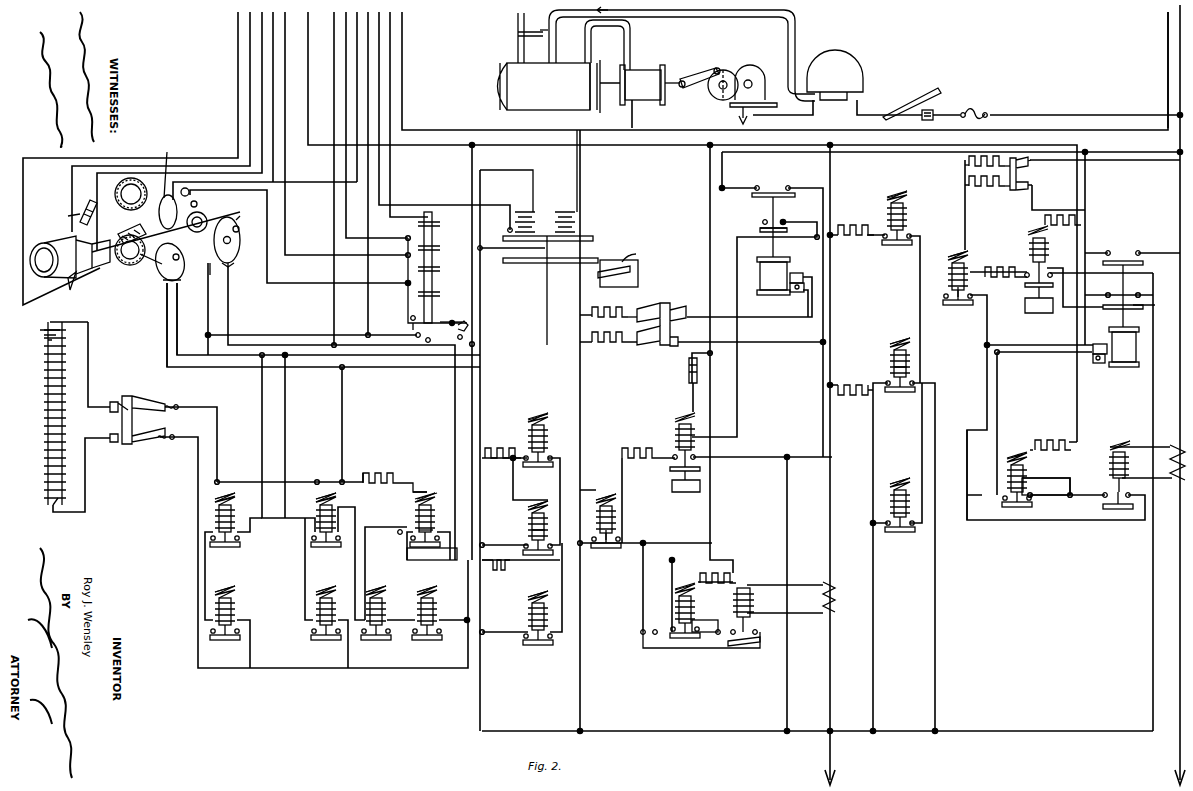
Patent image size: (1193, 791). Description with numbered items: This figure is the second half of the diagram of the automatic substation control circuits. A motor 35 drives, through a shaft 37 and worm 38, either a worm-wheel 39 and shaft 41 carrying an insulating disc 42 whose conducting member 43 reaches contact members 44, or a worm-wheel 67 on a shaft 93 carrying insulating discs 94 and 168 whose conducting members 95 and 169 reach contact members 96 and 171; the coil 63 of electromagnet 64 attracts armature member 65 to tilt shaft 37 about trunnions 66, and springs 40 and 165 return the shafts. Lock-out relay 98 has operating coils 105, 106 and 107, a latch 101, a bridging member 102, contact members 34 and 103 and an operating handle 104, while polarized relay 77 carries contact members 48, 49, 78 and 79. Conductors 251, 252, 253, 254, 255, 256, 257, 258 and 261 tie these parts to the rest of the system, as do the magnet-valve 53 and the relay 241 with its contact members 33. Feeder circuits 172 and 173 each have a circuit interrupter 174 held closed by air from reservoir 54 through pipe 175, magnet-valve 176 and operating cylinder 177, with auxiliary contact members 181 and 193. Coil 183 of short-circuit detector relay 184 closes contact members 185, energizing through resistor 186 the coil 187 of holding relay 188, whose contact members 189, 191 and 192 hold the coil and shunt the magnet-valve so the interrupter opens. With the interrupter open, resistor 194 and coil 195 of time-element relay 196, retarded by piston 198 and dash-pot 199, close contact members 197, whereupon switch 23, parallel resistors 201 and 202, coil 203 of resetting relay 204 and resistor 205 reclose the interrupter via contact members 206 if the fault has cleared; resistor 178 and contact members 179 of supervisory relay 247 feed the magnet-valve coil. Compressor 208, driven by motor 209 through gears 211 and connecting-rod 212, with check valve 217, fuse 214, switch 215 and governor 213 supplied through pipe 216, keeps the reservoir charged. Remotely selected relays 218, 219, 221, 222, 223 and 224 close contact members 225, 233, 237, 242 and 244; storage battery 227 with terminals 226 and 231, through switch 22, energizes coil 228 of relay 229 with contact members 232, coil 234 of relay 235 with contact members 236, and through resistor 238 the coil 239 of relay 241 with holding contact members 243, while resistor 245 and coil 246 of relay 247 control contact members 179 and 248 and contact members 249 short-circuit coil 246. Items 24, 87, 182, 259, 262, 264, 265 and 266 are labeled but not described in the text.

The switch 22 is at (144, 413).
The switch 23 is at (661, 332).
The relay armature 24 is at (1017, 180).
The contact members 33 is at (432, 527).
The contact members 34 is at (453, 315).
The motor 35 is at (53, 253).
The shaft 37 is at (77, 253).
The worm 38 is at (166, 231).
The worm-wheel 39 is at (128, 256).
The spring 40 is at (141, 241).
The shaft 41 is at (154, 249).
The insulating disc 42 is at (162, 262).
The electrical conducting member 43 is at (180, 256).
The contact members 44 is at (166, 281).
The contact members 48 is at (618, 263).
The contact members 49 is at (632, 253).
The magnet-valve 53 is at (519, 35).
The reservoir 54 is at (559, 86).
The operating coil 63 is at (88, 207).
The electromagnet 64 is at (66, 216).
The armature member 65 is at (101, 254).
The trunnions 66 is at (80, 277).
The worm-wheel 67 is at (135, 190).
The polarized relay 77 is at (543, 212).
The contact members 78 is at (555, 243).
The contact members 79 is at (500, 229).
The contact arm 87 is at (515, 256).
The shaft 93 is at (195, 224).
The insulating disc 94 is at (198, 201).
The electrical conducting member 95 is at (167, 169).
The contact members 96 is at (185, 187).
The lock-out relay 98 is at (437, 259).
The latch 101 is at (410, 316).
The bridging member 102 is at (414, 332).
The contact members 103 is at (428, 345).
The operating handle 104 is at (465, 337).
The operating coil 105 is at (441, 269).
The operating coil 106 is at (441, 247).
The operating coil 107 is at (441, 224).
The spring 165 is at (211, 214).
The insulating disc 168 is at (248, 214).
The conducting member 169 is at (249, 228).
The contact members 171 is at (233, 267).
The feeder circuit 172 is at (841, 464).
The feeder circuit 173 is at (1178, 760).
The circuit interrupter 174 is at (947, 249).
The pipe 175 is at (1098, 375).
The magnet-valve 176 is at (949, 306).
The operating cylinder 177 is at (948, 312).
The resistor 178 is at (671, 495).
The contact members 179 is at (719, 460).
The auxiliary contact members 181 is at (764, 220).
The resistor 182 is at (1004, 528).
The operating coil 183 is at (931, 529).
The short-circuit detector relay 184 is at (931, 554).
The contact members 185 is at (930, 580).
The resistor 186 is at (885, 512).
The operating coil 187 is at (865, 532).
The holding relay 188 is at (881, 555).
The contact members 189 is at (985, 505).
The contact members 191 is at (848, 562).
The contact members 192 is at (857, 586).
The auxiliary contact members 193 is at (944, 276).
The resistor 194 is at (872, 299).
The operating coil 195 is at (673, 417).
The time-element relay 196 is at (678, 441).
The contact members 197 is at (863, 358).
The piston 198 is at (676, 471).
The dash-pot 199 is at (864, 398).
The resistor 201 is at (801, 232).
The resistor 202 is at (801, 268).
The operating coil 203 is at (600, 513).
The resetting relay 204 is at (612, 540).
The resistor 205 is at (821, 356).
The contact members 206 is at (782, 414).
The compressor 208 is at (640, 70).
The motor 209 is at (735, 71).
The gears 211 is at (755, 94).
The connecting-rod 212 is at (702, 70).
The pneumatic governor 213 is at (845, 58).
The fuse 214 is at (974, 105).
The switch 215 is at (912, 103).
The pipe 216 is at (795, 38).
The check valve 217 is at (606, 28).
The relay 218 is at (337, 599).
The relay 219 is at (238, 598).
The relay 221 is at (439, 598).
The relay 222 is at (382, 600).
The relay 223 is at (878, 512).
The relay 224 is at (547, 442).
The contact members 225 is at (326, 617).
The positive terminal 226 is at (50, 322).
The storage battery 227 is at (46, 412).
The operating coil 228 is at (312, 493).
The relay 229 is at (338, 493).
The negative terminal 231 is at (53, 505).
The contact members 232 is at (326, 528).
The contact members 233 is at (225, 617).
The operating coil 234 is at (237, 492).
The relay 235 is at (230, 504).
The contact members 236 is at (225, 528).
The contact members 237 is at (427, 617).
The resistor 238 is at (395, 475).
The operating coil 239 is at (434, 490).
The relay 241 is at (436, 521).
The contact members 242 is at (376, 617).
The contact members 243 is at (410, 531).
The contact members 244 is at (719, 572).
The resistor 245 is at (679, 334).
The operating coil 246 is at (528, 514).
The supervisory relay 247 is at (705, 442).
The contact members 248 is at (677, 468).
The contact members 249 is at (717, 341).
The conductor 251 is at (686, 227).
The conductor 252 is at (130, 158).
The conductor 253 is at (341, 134).
The conductor 254 is at (180, 131).
The conductor 255 is at (161, 122).
The conductor 256 is at (403, 114).
The conductor 257 is at (329, 179).
The conductor 258 is at (438, 121).
The conductor 259 is at (1161, 70).
The conductor 261 is at (351, 97).
The conductor 262 is at (363, 174).
The conductor 264 is at (265, 106).
The conductor 265 is at (372, 126).
The conductor 266 is at (779, 71).